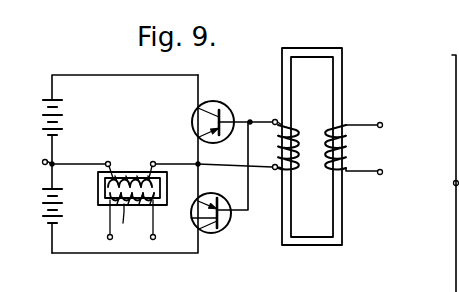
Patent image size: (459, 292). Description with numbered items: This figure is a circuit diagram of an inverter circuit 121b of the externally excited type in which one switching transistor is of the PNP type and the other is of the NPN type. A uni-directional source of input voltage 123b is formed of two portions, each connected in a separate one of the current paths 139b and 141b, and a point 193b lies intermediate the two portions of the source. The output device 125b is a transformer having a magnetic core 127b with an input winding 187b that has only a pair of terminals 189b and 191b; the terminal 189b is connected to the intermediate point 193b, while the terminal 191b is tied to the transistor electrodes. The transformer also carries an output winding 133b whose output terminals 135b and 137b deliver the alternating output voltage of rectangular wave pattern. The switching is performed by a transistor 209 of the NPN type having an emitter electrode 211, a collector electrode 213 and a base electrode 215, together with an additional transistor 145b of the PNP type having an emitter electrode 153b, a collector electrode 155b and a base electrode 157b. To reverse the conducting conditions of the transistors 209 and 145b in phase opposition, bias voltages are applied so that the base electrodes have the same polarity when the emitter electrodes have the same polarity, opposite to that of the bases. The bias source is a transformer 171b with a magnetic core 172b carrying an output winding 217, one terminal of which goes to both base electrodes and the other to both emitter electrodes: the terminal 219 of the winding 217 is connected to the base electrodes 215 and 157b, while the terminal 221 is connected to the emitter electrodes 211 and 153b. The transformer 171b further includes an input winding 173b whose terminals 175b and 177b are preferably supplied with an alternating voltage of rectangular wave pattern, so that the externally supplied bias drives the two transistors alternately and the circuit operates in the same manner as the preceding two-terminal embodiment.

The current path 139b is at (128, 100).
The uni-directional source of input voltage 123b is at (102, 146).
The magnetic core 127b is at (58, 200).
The point intermediate the two portions of the source 193b is at (34, 166).
The terminal 189b is at (86, 161).
The terminal 191b is at (173, 162).
The input winding 187b is at (130, 172).
The output device 125b is at (90, 186).
The current path 141b is at (102, 230).
The output terminal 137b is at (108, 238).
The output winding 133b is at (133, 222).
The output terminal 135b is at (156, 238).
The circuit 121b is at (173, 282).
The transistor 145b is at (256, 254).
The emitter electrode 153b is at (200, 197).
The collector electrode 155b is at (192, 218).
The base electrode 157b is at (231, 223).
The transistor 209 is at (241, 90).
The collector electrode 213 is at (197, 112).
The emitter electrode 211 is at (207, 142).
The base electrode 215 is at (223, 113).
The terminal 219 is at (268, 113).
The terminal 221 is at (240, 178).
The transformer 171b is at (381, 66).
The magnetic core 172b is at (342, 217).
The output winding 217 is at (292, 133).
The input winding 173b is at (343, 159).
The terminal 175b is at (382, 124).
The terminal 177b is at (381, 174).